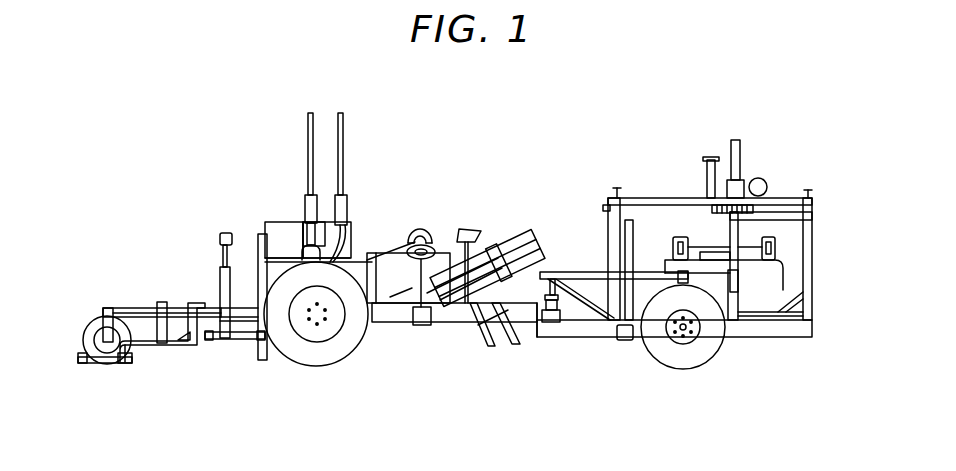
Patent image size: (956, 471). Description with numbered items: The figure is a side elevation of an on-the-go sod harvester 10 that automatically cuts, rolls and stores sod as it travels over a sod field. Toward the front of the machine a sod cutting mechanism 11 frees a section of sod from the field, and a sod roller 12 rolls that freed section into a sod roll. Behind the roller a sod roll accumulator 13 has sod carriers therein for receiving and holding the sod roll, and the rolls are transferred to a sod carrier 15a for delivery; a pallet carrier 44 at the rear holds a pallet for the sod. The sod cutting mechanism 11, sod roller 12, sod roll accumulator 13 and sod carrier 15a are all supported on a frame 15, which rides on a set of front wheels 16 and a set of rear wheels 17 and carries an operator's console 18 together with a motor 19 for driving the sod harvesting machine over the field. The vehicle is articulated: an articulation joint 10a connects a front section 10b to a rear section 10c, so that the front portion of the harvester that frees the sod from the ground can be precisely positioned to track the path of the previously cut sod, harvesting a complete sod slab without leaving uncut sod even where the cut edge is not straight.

The on-the-go sod harvester 10 is at (388, 124).
The articulation joint 10a is at (537, 326).
The front section 10b is at (243, 341).
The rear section 10c is at (740, 338).
The sod cutting mechanism 11 is at (252, 214).
The sod roller 12 is at (505, 222).
The sod roll accumulator 13 is at (575, 255).
The frame 15 is at (397, 312).
The sod carrier 15a is at (782, 314).
The front wheels 16 is at (333, 362).
The rear wheels 17 is at (655, 348).
The operator's console 18 is at (430, 242).
The motor 19 is at (323, 228).
The pallet carrier 44 is at (762, 230).